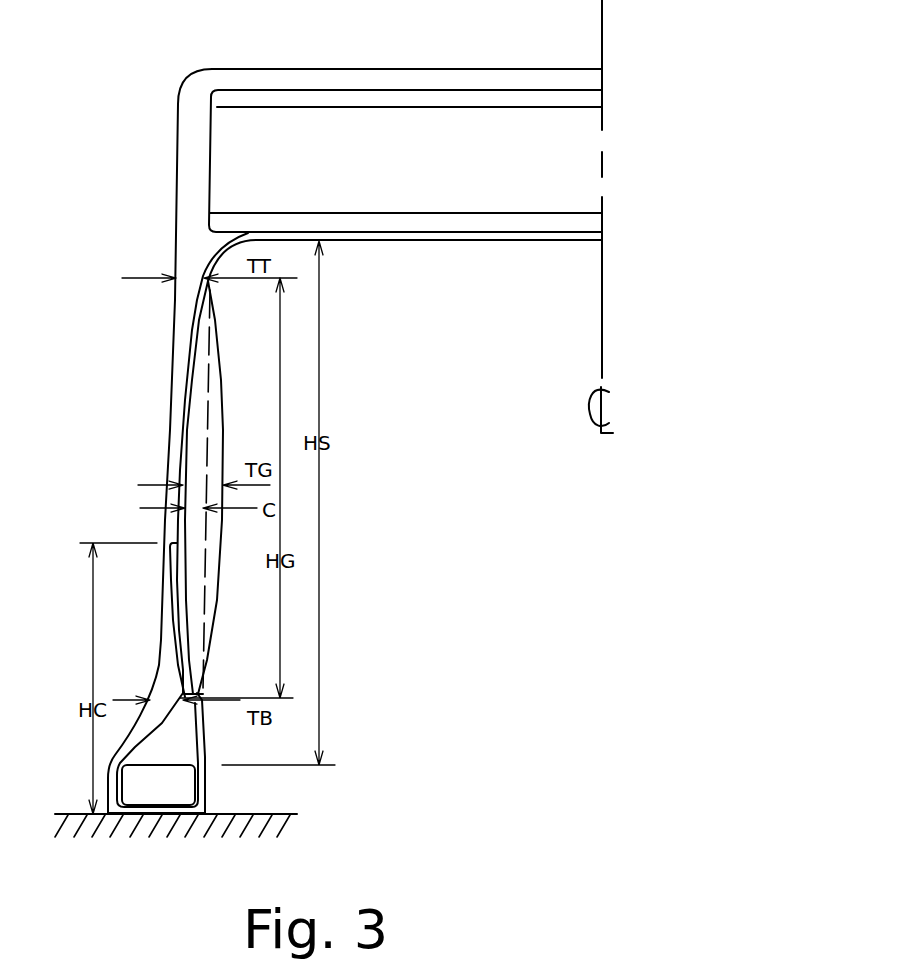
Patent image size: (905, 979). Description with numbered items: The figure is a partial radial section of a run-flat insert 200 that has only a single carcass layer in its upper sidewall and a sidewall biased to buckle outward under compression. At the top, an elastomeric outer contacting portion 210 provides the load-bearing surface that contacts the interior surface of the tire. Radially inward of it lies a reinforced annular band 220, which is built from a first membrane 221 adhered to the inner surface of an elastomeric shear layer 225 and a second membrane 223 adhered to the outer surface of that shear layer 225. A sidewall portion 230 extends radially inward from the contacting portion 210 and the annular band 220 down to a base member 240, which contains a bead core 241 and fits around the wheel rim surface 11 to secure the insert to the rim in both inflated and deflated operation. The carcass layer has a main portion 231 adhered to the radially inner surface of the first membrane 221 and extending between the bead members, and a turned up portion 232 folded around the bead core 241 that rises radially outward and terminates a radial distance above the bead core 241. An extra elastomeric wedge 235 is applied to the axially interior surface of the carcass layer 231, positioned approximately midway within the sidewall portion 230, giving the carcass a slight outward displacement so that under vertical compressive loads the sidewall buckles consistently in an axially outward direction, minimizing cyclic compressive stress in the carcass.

The run-flat insert 200 is at (497, 527).
The outer contacting portion 210 is at (397, 78).
The reinforced annular band 220 is at (510, 152).
The first membrane 221 is at (445, 218).
The second membrane 223 is at (552, 95).
The elastomeric shear layer 225 is at (552, 160).
The sidewall portion 230 is at (87, 233).
The main portion of carcass layer 231 is at (430, 233).
The turned up portion 232 is at (173, 577).
The elastomeric wedge 235 is at (192, 527).
The base member 240 is at (271, 743).
The bead core 241 is at (180, 777).
The wheel rim surface 11 is at (267, 813).